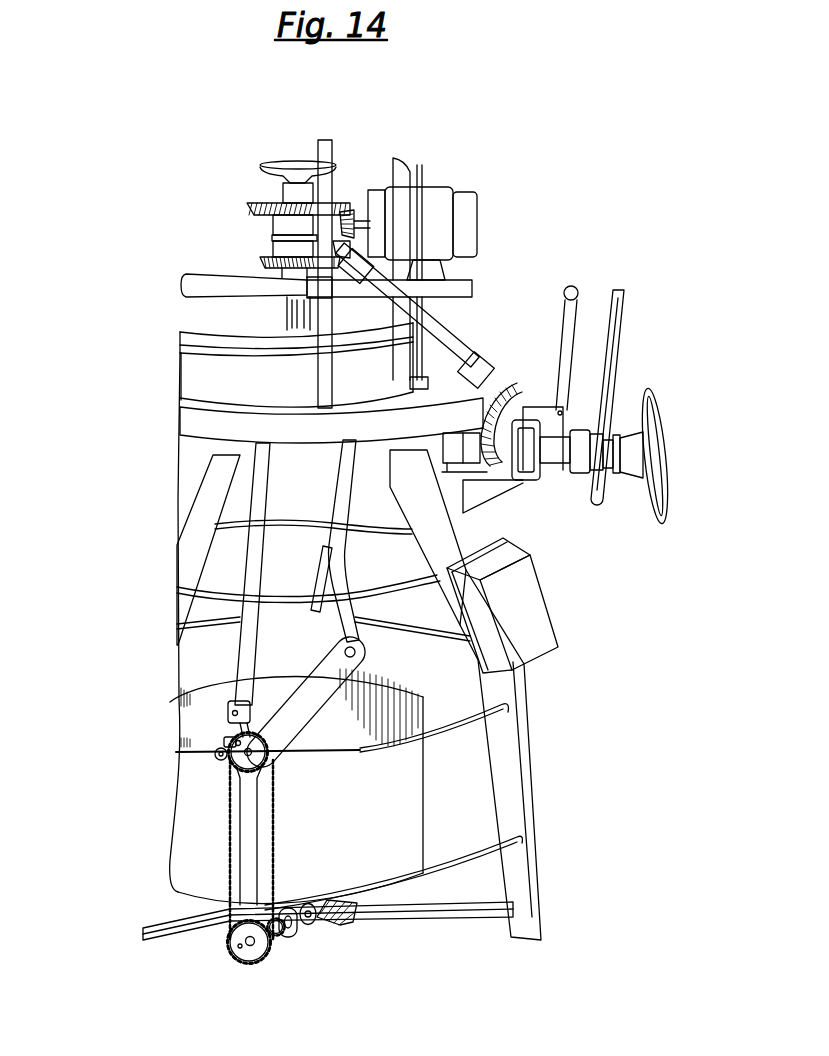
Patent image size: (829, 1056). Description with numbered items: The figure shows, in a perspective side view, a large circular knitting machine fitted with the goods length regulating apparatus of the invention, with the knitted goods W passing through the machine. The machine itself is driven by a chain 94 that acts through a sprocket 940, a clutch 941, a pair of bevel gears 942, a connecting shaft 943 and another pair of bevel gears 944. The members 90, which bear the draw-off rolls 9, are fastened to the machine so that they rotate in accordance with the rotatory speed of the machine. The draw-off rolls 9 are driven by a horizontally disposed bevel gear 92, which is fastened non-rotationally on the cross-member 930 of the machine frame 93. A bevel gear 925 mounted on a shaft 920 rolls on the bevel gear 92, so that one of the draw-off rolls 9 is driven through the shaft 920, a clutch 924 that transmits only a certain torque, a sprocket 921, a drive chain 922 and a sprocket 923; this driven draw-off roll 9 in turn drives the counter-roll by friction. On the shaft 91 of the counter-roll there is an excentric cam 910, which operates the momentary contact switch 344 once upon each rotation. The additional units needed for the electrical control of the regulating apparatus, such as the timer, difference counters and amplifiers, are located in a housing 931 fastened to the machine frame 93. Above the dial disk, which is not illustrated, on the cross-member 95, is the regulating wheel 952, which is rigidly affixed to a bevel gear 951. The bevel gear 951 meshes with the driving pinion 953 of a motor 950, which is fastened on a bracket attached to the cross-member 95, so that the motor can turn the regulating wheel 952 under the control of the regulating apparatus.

The draw-off rolls 9 is at (328, 672).
The members 90 is at (333, 545).
The shaft 91 is at (220, 752).
The bevel gear 92 is at (350, 910).
The machine frame 93 is at (512, 782).
The chain 94 is at (617, 313).
The cross-member 95 is at (195, 285).
The momentary contact switch 344 is at (232, 703).
The excentric cam 910 is at (230, 740).
The shaft 920 is at (279, 934).
The sprocket 921 is at (230, 952).
The drive chain 922 is at (228, 847).
The sprocket 923 is at (243, 767).
The clutch 924 is at (290, 932).
The bevel gear 925 is at (317, 922).
The cross-member 930 is at (462, 908).
The housing 931 is at (530, 623).
The sprocket 940 is at (607, 492).
The clutch 941 is at (565, 455).
The pair of bevel gears 942 is at (520, 388).
The connecting shaft 943 is at (430, 338).
The pair of bevel gears 944 is at (284, 256).
The motor 950 is at (435, 202).
The bevel gear 951 is at (250, 207).
The regulating wheel 952 is at (297, 160).
The driving pinion 953 is at (355, 208).
The workpiece drum W is at (293, 465).